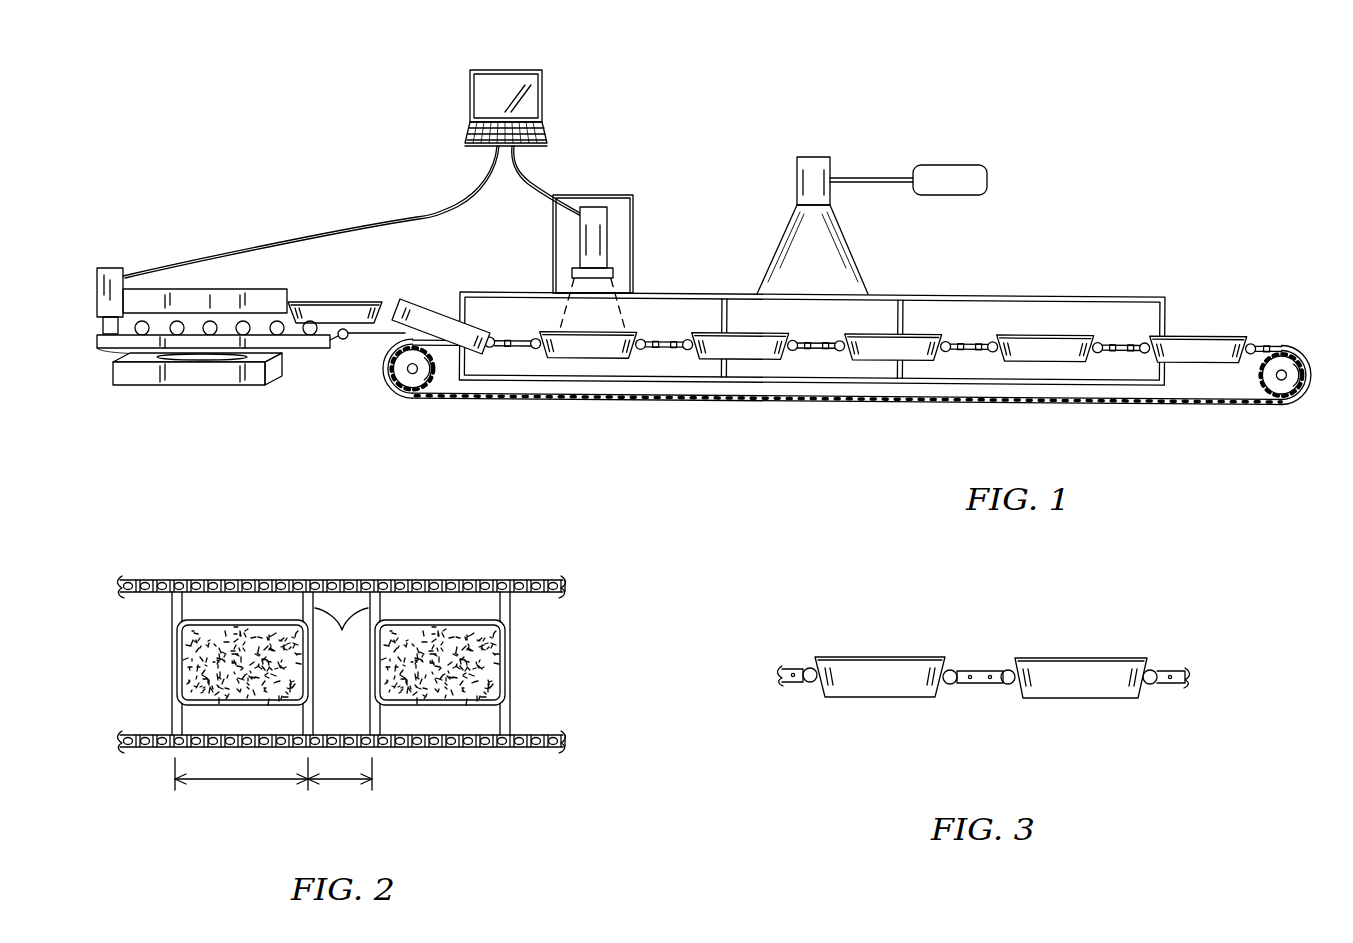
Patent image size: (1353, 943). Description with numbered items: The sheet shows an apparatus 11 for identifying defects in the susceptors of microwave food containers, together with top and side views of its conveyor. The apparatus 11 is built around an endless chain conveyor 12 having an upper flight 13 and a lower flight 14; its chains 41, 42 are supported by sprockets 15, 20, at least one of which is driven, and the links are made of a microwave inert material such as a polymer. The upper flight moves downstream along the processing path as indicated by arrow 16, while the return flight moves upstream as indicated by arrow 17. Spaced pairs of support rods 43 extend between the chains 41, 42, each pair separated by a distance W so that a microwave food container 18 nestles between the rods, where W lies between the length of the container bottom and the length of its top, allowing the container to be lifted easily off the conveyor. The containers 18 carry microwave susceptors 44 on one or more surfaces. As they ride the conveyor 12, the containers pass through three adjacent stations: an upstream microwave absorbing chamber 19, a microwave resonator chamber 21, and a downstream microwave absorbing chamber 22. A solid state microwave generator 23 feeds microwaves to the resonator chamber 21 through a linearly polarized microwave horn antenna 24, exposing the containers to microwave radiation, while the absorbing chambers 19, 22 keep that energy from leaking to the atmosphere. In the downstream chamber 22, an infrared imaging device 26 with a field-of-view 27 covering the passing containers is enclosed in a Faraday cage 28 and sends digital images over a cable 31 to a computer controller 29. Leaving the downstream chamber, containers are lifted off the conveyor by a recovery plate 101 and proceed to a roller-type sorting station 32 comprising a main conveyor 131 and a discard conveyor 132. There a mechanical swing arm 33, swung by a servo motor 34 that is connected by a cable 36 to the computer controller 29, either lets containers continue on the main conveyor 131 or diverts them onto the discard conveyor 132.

In FIG. 1, the apparatus 11 is at (1121, 142).
In FIG. 1, the endless chain conveyor 12 is at (846, 354).
In FIG. 1, the upper flight 13 is at (1128, 337).
In FIG. 2, the upper flight 13 is at (354, 636).
In FIG. 3, the upper flight 13 is at (991, 677).
In FIG. 1, the lower flight 14 is at (962, 401).
In FIG. 1, the sprocket 15 is at (1278, 378).
In FIG. 1, the arrow 16 is at (785, 318).
In FIG. 2, the arrow 16 is at (270, 810).
In FIG. 3, the arrow 16 is at (917, 745).
In FIG. 1, the arrow 17 is at (663, 425).
In FIG. 1, the microwave food container 18 is at (330, 302).
In FIG. 2, the microwave food container 18 is at (336, 637).
In FIG. 3, the microwave food container 18 is at (878, 698).
In FIG. 1, the upstream microwave absorbing chamber 19 is at (812, 371).
In FIG. 1, the sprocket 20 is at (416, 378).
In FIG. 1, the microwave resonator chamber 21 is at (817, 381).
In FIG. 1, the downstream microwave absorbing chamber 22 is at (580, 381).
In FIG. 1, the solid state microwave generator 23 is at (950, 165).
In FIG. 1, the linearly polarized microwave horn antenna 24 is at (850, 250).
In FIG. 1, the infrared imaging device 26 is at (607, 233).
In FIG. 1, the field-of-view 27 is at (627, 310).
In FIG. 1, the Faraday cage 28 is at (622, 257).
In FIG. 1, the computer controller 29 is at (556, 94).
In FIG. 1, the cable 31 is at (527, 178).
In FIG. 1, the roller-type sorting station 32 is at (249, 313).
In FIG. 1, the mechanical swing arm 33 is at (220, 289).
In FIG. 1, the servo motor 34 is at (123, 268).
In FIG. 1, the cable 36 is at (417, 217).
In FIG. 2, the chain 41 is at (533, 593).
In FIG. 2, the chain 42 is at (533, 734).
In FIG. 2, the support rods 43 is at (341, 635).
In FIG. 3, the support rods 43 is at (807, 668).
In FIG. 2, the microwave susceptors 44 is at (242, 652).
In FIG. 1, the recovery plate 101 is at (402, 300).
In FIG. 1, the main conveyor 131 is at (97, 340).
In FIG. 1, the discard conveyor 132 is at (190, 385).
In FIG. 2, the distance W is at (273, 770).